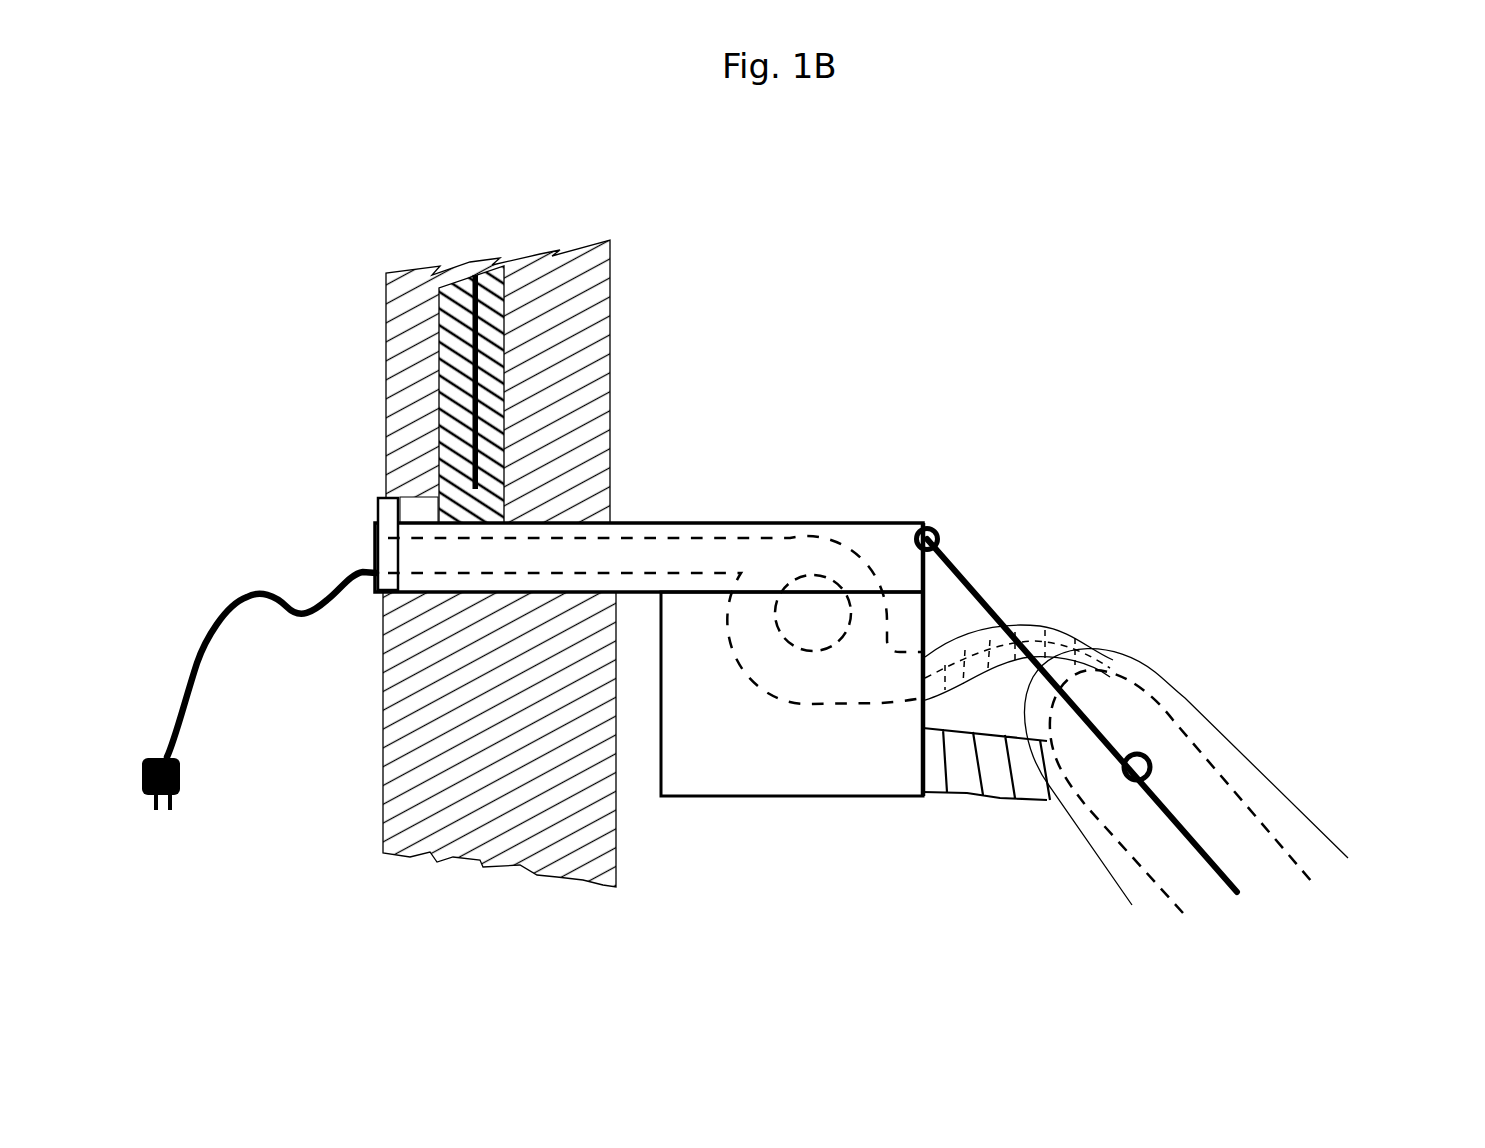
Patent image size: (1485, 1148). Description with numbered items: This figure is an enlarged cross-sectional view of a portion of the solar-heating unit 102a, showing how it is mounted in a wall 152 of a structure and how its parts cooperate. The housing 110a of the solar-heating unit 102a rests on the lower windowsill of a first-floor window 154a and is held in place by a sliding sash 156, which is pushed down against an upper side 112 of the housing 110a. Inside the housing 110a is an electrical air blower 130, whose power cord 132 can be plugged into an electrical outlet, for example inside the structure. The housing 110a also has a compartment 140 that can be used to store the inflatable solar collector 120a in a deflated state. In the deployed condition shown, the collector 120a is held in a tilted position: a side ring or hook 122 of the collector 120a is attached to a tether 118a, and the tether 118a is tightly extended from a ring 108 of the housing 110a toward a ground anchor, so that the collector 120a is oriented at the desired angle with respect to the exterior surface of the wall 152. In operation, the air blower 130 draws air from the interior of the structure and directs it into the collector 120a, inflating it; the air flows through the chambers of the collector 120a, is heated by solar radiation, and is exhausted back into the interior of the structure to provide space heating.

The solar-heating unit 102a is at (892, 555).
The ring 108 is at (934, 525).
The housing 110a is at (690, 798).
The upper side 112 is at (585, 519).
The tether 118a is at (983, 587).
The inflatable solar collector 120a is at (1292, 800).
The side ring 122 is at (1155, 750).
The electrical air blower 130 is at (776, 692).
The power cord 132 is at (220, 627).
The compartment 140 is at (860, 770).
The wall 152 is at (598, 345).
The first-floor window 154a is at (439, 563).
The sliding sash 156 is at (437, 413).